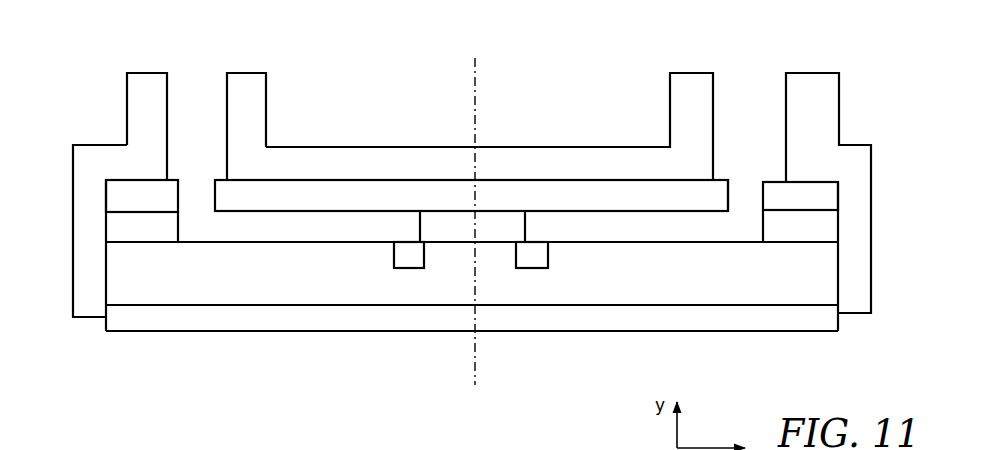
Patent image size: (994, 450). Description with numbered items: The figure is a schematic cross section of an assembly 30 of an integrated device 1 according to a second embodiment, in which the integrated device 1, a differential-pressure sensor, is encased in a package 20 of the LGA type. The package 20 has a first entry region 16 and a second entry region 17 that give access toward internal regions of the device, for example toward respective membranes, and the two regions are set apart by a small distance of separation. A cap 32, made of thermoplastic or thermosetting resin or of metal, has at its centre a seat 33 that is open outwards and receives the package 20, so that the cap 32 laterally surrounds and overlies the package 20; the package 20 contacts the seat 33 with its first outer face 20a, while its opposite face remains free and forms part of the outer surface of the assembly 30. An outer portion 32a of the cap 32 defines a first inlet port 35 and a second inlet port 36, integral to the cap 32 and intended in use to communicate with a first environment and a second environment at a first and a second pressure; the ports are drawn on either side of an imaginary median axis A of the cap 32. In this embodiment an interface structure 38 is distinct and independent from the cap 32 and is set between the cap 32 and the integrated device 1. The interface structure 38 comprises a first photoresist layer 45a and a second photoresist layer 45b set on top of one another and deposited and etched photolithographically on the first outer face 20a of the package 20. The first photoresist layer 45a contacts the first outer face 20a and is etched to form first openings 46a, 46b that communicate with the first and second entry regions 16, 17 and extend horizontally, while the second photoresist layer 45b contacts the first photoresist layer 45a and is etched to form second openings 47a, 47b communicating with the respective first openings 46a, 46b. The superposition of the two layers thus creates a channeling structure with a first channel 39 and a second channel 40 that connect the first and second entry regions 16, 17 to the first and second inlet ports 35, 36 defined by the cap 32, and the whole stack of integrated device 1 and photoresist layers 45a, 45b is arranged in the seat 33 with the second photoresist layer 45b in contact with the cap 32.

The integrated device 1 is at (182, 333).
The first entry region 16 is at (418, 258).
The second entry region 17 is at (535, 262).
The package 20 is at (328, 323).
The first outer face 20a is at (118, 240).
The assembly 30 is at (578, 112).
The cap 32 is at (79, 181).
The outer portion 32a is at (265, 113).
The seat 33 is at (835, 315).
The first inlet port 35 is at (137, 111).
The second inlet port 36 is at (833, 103).
The interface structure 38 is at (245, 252).
The first channel 39 is at (302, 245).
The second channel 40 is at (692, 243).
The first photoresist layer 45a is at (832, 223).
The second photoresist layer 45b is at (820, 192).
The first opening 46a is at (372, 231).
The first opening 46b is at (652, 231).
The second opening 47a is at (183, 210).
The second opening 47b is at (758, 188).
The median axis A is at (475, 118).